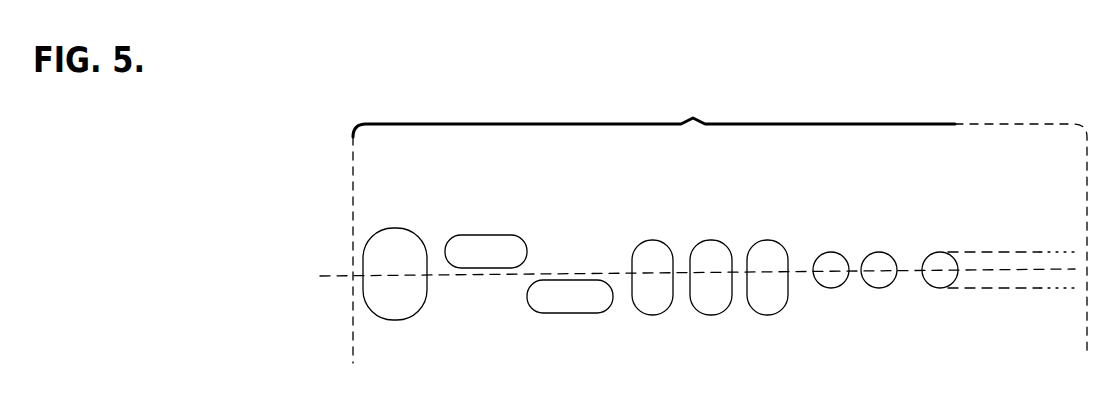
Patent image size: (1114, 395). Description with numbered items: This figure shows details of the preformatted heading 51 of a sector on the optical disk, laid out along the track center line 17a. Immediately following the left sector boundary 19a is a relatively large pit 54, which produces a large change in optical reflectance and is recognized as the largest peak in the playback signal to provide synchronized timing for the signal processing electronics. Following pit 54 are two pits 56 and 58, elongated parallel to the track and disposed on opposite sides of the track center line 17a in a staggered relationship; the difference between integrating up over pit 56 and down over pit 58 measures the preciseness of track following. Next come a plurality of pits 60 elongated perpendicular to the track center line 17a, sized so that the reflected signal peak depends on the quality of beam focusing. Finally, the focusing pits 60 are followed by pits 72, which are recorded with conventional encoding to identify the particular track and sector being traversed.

The left sector boundary 19a is at (352, 192).
The track center line 17a is at (320, 276).
The preformatted heading 51 is at (654, 109).
The pit 54 is at (383, 238).
The elongated pit 56 is at (460, 240).
The elongated pit 58 is at (558, 307).
The pits 60 is at (795, 314).
The pits 72 is at (970, 243).